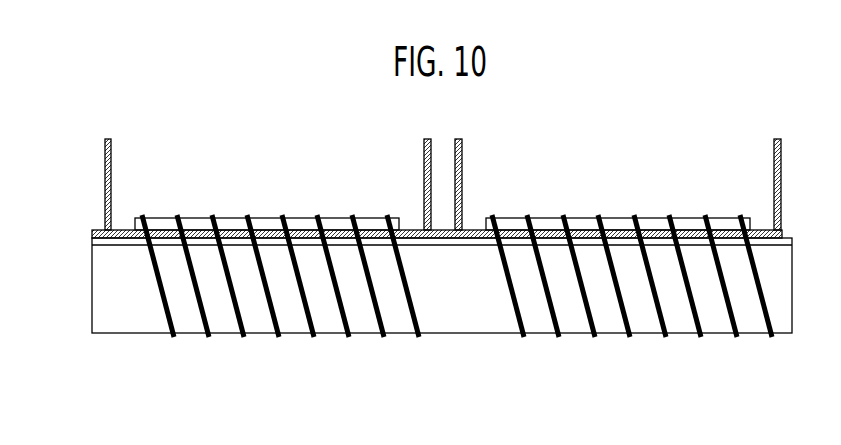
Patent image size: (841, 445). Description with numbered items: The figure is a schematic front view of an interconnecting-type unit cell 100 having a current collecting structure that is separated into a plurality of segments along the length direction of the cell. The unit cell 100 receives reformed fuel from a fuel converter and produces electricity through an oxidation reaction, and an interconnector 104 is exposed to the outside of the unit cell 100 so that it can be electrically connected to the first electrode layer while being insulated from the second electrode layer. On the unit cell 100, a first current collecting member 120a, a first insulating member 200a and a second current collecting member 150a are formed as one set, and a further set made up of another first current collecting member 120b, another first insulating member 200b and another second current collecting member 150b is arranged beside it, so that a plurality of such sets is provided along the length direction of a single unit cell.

The unit cell 100 is at (89, 317).
The interconnector 104 is at (100, 242).
The first current collecting member 120a is at (123, 228).
The first current collecting member 120b is at (473, 228).
The first insulating member 200a is at (260, 223).
The first insulating member 200b is at (610, 224).
The second current collecting member 150a is at (274, 318).
The second current collecting member 150b is at (623, 319).